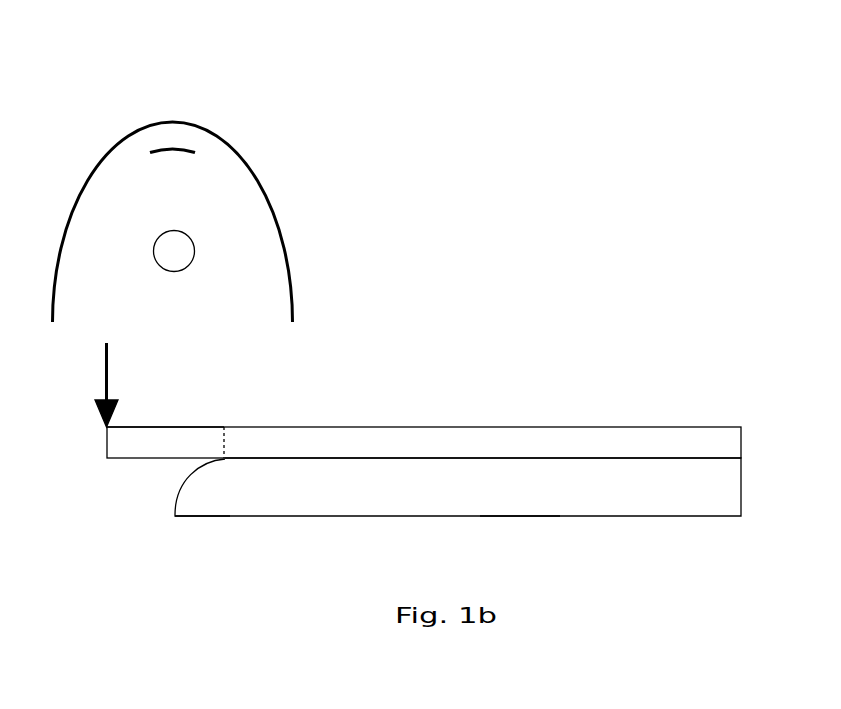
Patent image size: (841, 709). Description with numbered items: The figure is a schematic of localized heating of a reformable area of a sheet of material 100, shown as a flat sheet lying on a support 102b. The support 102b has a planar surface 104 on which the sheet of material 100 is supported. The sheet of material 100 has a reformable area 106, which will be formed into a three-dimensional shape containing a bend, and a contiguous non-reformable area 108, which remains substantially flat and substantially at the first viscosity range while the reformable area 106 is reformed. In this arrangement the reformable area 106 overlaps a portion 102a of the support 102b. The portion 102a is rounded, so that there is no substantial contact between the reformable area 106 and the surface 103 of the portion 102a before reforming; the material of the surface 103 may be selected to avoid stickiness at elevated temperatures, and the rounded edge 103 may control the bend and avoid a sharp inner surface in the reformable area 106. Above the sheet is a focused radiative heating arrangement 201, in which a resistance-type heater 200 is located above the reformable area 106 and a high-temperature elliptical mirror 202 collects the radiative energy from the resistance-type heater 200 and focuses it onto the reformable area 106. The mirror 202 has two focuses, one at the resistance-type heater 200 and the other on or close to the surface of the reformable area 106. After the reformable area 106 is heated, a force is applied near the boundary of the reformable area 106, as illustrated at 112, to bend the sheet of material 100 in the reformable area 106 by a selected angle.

The sheet of material 100 is at (444, 437).
The portion of the support 102a is at (198, 505).
The support 102b is at (503, 507).
The rounded edge 103 is at (178, 493).
The planar surface 104 is at (579, 459).
The reformable area 106 is at (164, 432).
The non-reformable area 108 is at (252, 433).
The applied force 112 is at (105, 388).
The resistance-type heater 200 is at (178, 248).
The focused radiative heating arrangement 201 is at (101, 182).
The high-temperature elliptical mirror 202 is at (154, 149).